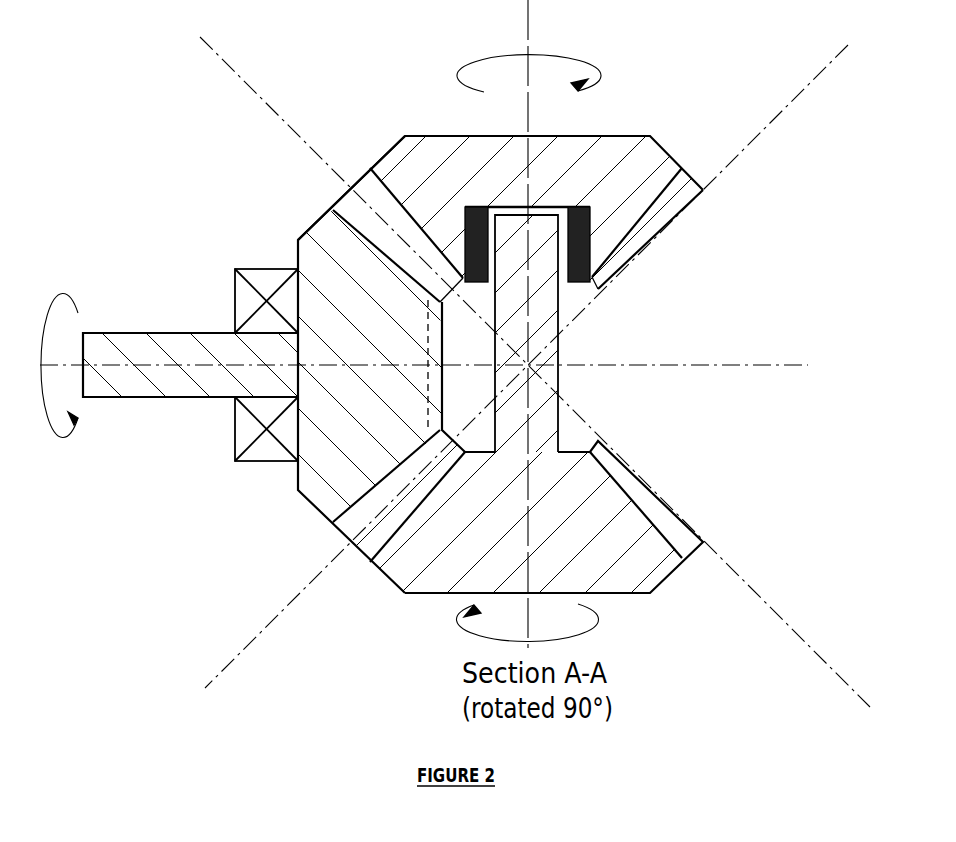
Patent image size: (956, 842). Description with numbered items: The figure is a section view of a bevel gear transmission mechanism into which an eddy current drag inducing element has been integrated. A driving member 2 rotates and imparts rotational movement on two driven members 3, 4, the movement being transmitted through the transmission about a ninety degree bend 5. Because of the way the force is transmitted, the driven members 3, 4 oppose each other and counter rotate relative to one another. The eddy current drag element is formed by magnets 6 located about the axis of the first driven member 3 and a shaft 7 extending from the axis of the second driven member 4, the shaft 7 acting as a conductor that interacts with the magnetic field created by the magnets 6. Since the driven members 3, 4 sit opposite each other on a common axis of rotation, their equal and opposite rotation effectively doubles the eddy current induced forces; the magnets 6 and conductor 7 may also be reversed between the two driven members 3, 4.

The driving member 2 is at (296, 243).
The first driven member 3 is at (465, 186).
The second driven member 4 is at (384, 578).
The 90 degree bend 5 is at (352, 193).
The magnets 6 is at (583, 283).
The shaft 7 is at (533, 269).